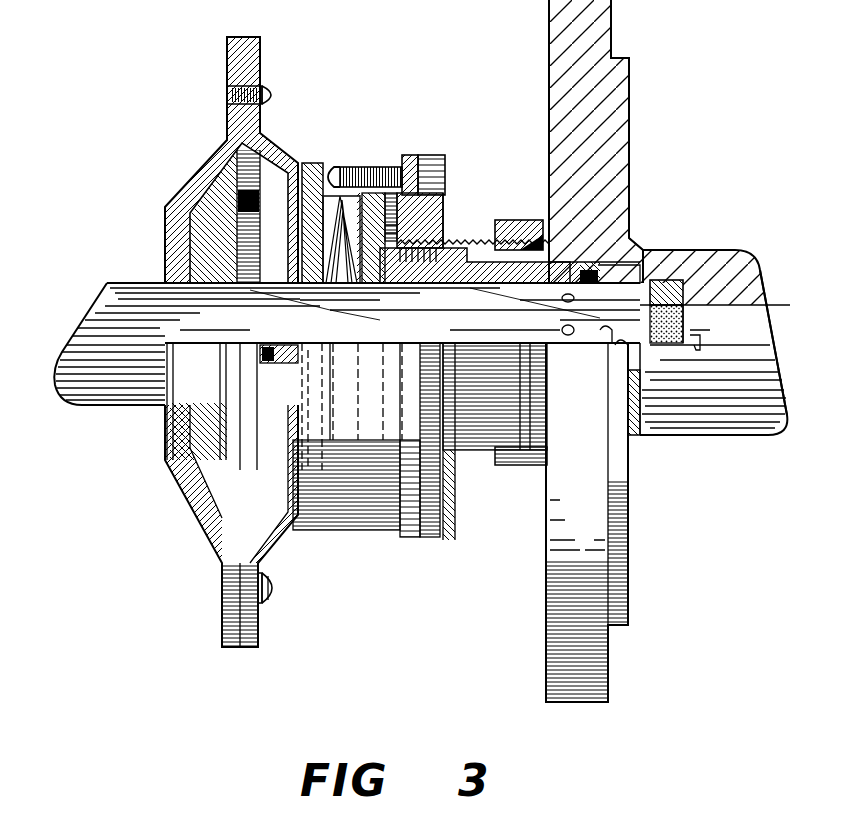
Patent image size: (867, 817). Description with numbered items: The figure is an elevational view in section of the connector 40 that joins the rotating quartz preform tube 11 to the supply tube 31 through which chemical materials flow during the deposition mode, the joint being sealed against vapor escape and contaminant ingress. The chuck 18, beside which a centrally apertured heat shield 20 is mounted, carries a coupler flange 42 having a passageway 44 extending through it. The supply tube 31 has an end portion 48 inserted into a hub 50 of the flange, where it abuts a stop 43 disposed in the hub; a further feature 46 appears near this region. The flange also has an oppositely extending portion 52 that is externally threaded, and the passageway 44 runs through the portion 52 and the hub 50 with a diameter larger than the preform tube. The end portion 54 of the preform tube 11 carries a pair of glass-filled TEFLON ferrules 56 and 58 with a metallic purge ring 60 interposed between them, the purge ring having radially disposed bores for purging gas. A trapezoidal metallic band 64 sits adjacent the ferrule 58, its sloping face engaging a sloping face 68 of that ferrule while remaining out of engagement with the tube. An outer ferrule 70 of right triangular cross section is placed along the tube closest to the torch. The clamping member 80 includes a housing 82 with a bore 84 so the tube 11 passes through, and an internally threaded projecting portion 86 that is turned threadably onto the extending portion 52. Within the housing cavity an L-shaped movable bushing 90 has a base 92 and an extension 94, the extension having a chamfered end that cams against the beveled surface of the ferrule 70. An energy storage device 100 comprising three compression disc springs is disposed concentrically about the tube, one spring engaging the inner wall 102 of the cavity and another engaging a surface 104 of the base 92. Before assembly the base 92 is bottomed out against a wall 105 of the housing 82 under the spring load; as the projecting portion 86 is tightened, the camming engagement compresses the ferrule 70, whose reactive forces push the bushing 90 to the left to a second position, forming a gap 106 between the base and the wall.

The quartz preform tube 11 is at (107, 278).
The chuck 18 is at (547, 110).
The heat shield 20 is at (166, 234).
The supply tube 31 is at (758, 320).
The connector 40 is at (162, 52).
The coupler flange 42 is at (555, 17).
The stop 43 is at (654, 262).
The passageway 44 is at (606, 334).
The bearing 46 is at (670, 370).
The end portion 48 is at (690, 304).
The hub 50 is at (684, 258).
The extending portion 52 is at (500, 242).
The end portion 54 is at (530, 302).
The ferrule 56 is at (612, 280).
The ferrule 58 is at (552, 265).
The purge ring 60 is at (586, 270).
The band 64 is at (462, 288).
The sloping face 68 is at (320, 198).
The outer ferrule 70 is at (424, 290).
The clamping member 80 is at (312, 160).
The housing 82 is at (364, 166).
The bore 84 is at (432, 246).
The projecting portion 86 is at (470, 246).
The bushing 90 is at (386, 212).
The base 92 is at (390, 232).
The extension 94 is at (392, 288).
The energy storage device 100 is at (322, 292).
The inner wall 102 is at (310, 232).
The surface 104 is at (338, 170).
The wall 105 is at (446, 234).
The gap 106 is at (390, 168).